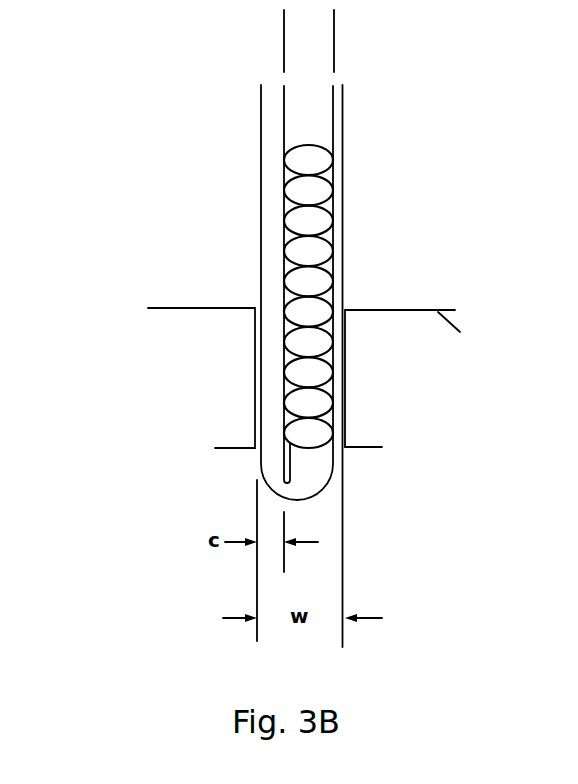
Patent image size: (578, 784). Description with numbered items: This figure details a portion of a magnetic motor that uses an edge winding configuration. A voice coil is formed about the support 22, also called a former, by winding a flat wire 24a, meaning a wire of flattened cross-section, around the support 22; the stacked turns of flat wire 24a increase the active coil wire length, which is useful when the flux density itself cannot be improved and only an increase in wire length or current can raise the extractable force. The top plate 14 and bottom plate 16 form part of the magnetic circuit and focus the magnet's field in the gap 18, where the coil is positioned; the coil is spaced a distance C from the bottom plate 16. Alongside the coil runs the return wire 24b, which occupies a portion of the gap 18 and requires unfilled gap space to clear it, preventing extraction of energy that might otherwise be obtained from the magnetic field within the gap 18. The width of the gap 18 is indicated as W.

The support 22 is at (343, 100).
The flat wire 24a is at (323, 149).
The return wire 24b is at (273, 268).
The gap 18 is at (347, 302).
The bottom plate 16 is at (223, 310).
The top plate 14 is at (373, 312).